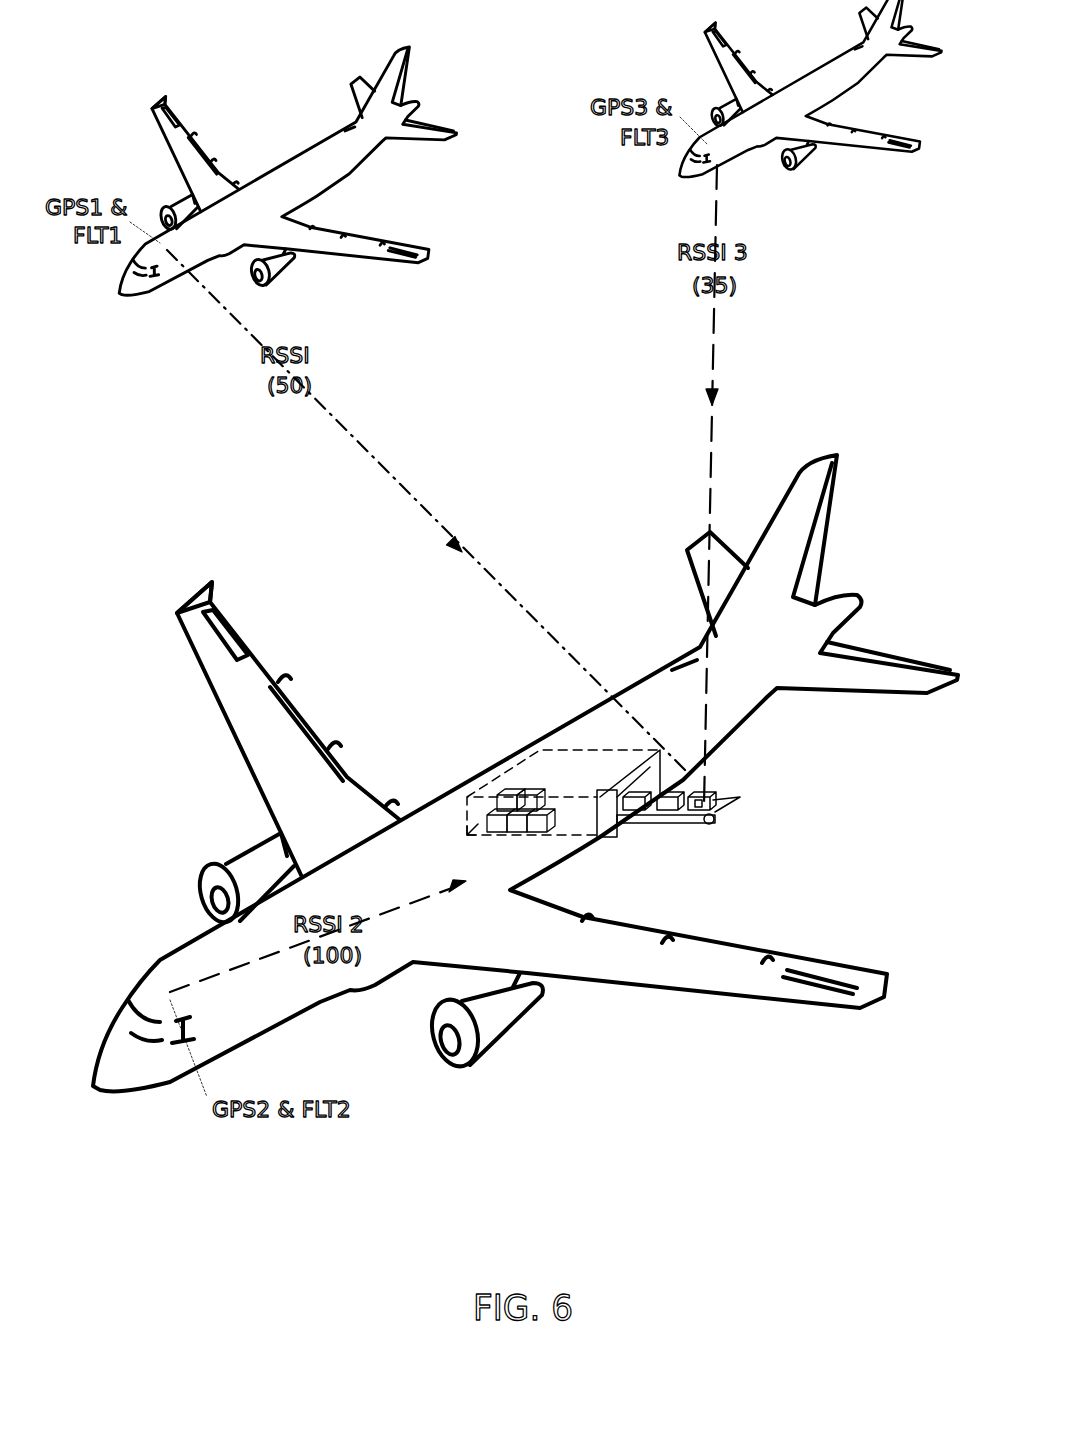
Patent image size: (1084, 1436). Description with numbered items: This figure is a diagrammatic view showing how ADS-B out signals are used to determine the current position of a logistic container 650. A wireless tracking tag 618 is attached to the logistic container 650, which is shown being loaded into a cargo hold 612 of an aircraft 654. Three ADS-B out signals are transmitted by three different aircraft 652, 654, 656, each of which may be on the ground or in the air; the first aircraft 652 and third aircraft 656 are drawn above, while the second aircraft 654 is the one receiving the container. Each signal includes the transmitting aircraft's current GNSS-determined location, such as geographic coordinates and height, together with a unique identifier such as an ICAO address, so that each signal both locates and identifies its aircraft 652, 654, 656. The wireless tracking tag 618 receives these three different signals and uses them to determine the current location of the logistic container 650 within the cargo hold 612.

The aircraft 654 is at (157, 1005).
The aircraft 652 is at (279, 163).
The aircraft 656 is at (810, 83).
The cargo hold 612 is at (523, 765).
The wireless tracking tag 618 is at (713, 810).
The logistic container 650 is at (717, 795).